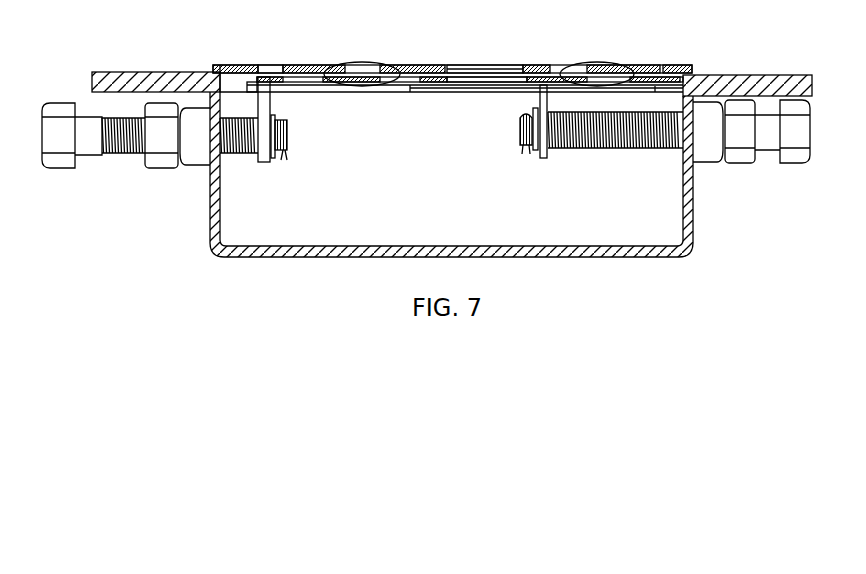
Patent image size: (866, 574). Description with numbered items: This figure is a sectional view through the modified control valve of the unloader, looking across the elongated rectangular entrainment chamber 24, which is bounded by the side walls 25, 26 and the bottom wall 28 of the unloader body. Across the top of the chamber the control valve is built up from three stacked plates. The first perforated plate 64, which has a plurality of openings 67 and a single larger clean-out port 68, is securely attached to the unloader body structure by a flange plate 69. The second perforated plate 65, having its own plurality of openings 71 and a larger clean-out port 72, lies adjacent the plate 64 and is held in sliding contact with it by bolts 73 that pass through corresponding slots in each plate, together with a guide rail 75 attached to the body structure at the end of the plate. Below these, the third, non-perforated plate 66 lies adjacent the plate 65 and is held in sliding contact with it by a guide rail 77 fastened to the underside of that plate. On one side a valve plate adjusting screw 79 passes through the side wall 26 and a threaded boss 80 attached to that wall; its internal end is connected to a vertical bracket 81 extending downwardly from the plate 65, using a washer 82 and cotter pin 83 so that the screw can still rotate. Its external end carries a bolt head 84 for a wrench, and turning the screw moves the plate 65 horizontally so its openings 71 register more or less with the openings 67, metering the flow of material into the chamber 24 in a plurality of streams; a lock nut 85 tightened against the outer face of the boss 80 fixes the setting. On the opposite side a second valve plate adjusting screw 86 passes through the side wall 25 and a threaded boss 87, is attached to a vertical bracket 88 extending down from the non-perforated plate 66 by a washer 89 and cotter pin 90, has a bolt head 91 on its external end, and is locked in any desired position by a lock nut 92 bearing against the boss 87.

The entrainment chamber 24 is at (345, 232).
The side wall 25 is at (690, 224).
The side wall 26 is at (210, 228).
The bottom wall 28 is at (592, 255).
The perforated plate 64 is at (298, 65).
The perforated plate 65 is at (326, 82).
The non-perforated plate 66 is at (435, 82).
The openings 67 is at (267, 65).
The clean-out port 68 is at (489, 65).
The flange plate 69 is at (229, 65).
The openings 71 is at (305, 82).
The clean-out port 72 is at (474, 82).
The bolts 73 is at (362, 62).
The guide rail 75 is at (385, 92).
The guide rail 77 is at (503, 90).
The valve plate adjusting screw 79 is at (112, 153).
The threaded boss 80 is at (195, 165).
The vertical bracket 81 is at (262, 162).
The washer 82 is at (275, 158).
The cotter pin 83 is at (290, 152).
The bolt head 84 is at (58, 168).
The lock nut 85 is at (153, 168).
The valve plate adjusting screw 86 is at (617, 148).
The threaded boss 87 is at (708, 162).
The vertical bracket 88 is at (545, 158).
The washer 89 is at (536, 152).
The cotter pin 90 is at (524, 148).
The bolt head 91 is at (793, 163).
The lock nut 92 is at (736, 163).